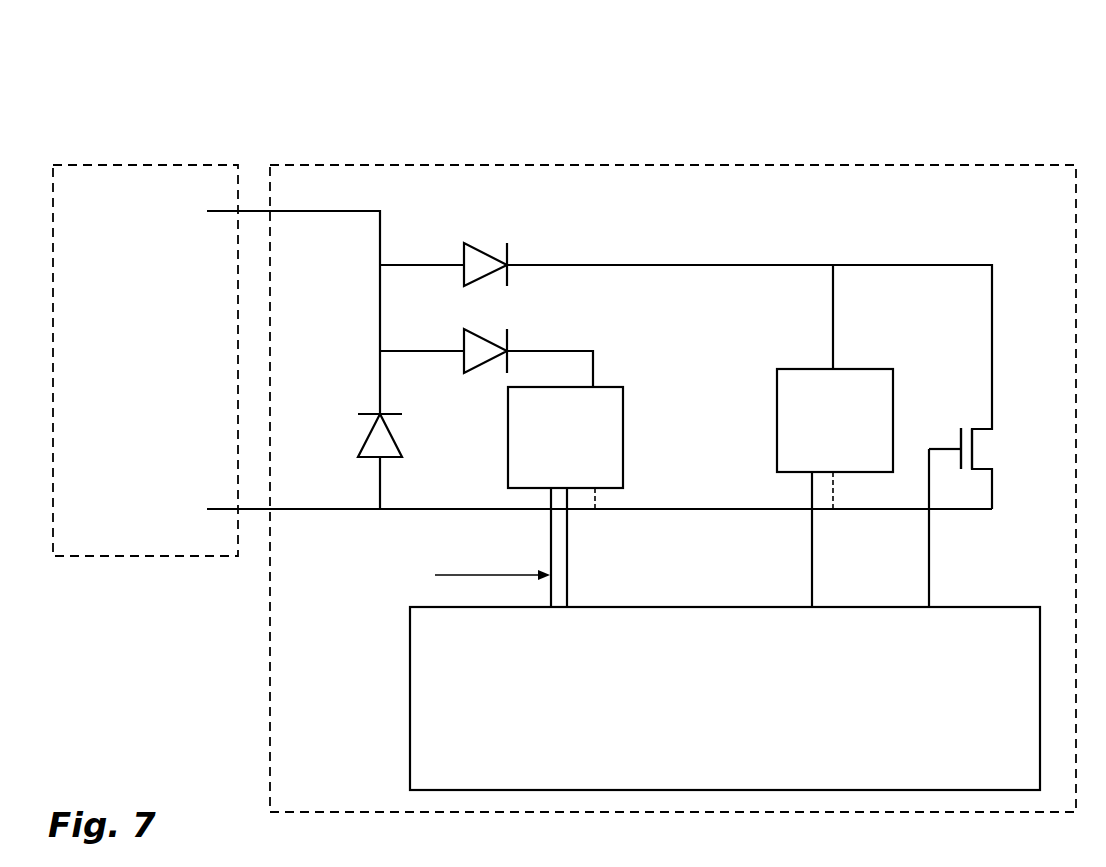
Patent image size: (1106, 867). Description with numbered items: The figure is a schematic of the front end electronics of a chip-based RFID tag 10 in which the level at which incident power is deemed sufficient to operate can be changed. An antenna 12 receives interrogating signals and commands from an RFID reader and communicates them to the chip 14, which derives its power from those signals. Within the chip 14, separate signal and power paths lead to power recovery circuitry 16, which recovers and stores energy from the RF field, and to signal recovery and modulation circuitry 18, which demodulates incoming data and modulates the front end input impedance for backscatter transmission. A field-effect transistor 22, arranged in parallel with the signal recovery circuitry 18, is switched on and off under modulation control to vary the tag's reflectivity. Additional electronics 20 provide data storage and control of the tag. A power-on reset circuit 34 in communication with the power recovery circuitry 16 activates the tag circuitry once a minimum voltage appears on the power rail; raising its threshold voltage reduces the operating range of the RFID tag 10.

The RFID tag 10 is at (976, 127).
The antenna 12 is at (143, 163).
The chip 14 is at (373, 163).
The power recovery circuitry 16 is at (607, 385).
The signal recovery and modulation circuitry 18 is at (875, 368).
The additional electronics 20 is at (410, 686).
The field-effect transistor 22 is at (985, 472).
The power-on reset circuit 34 is at (550, 542).